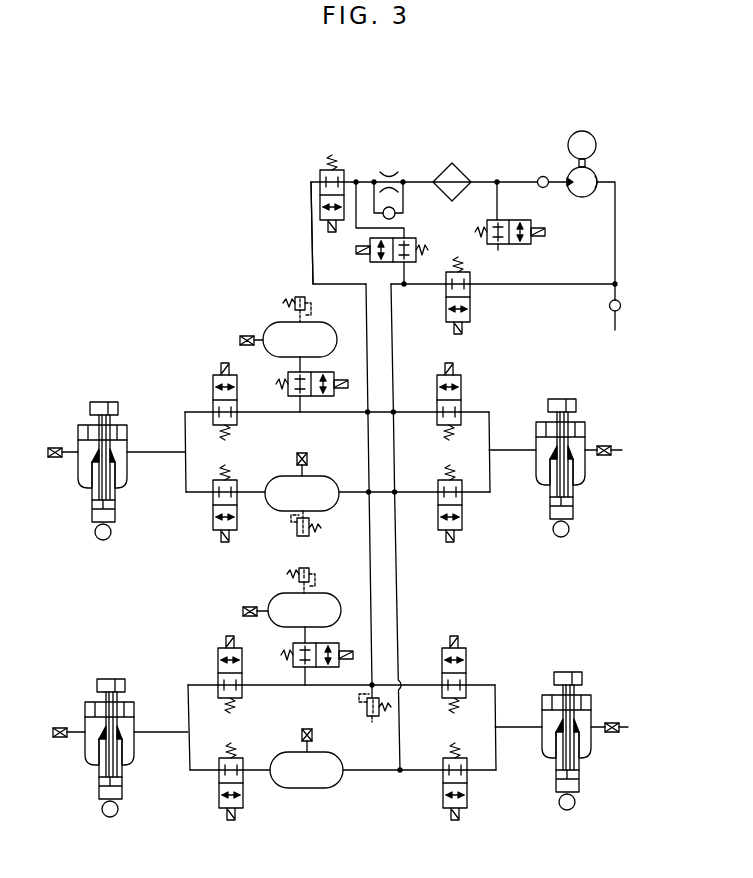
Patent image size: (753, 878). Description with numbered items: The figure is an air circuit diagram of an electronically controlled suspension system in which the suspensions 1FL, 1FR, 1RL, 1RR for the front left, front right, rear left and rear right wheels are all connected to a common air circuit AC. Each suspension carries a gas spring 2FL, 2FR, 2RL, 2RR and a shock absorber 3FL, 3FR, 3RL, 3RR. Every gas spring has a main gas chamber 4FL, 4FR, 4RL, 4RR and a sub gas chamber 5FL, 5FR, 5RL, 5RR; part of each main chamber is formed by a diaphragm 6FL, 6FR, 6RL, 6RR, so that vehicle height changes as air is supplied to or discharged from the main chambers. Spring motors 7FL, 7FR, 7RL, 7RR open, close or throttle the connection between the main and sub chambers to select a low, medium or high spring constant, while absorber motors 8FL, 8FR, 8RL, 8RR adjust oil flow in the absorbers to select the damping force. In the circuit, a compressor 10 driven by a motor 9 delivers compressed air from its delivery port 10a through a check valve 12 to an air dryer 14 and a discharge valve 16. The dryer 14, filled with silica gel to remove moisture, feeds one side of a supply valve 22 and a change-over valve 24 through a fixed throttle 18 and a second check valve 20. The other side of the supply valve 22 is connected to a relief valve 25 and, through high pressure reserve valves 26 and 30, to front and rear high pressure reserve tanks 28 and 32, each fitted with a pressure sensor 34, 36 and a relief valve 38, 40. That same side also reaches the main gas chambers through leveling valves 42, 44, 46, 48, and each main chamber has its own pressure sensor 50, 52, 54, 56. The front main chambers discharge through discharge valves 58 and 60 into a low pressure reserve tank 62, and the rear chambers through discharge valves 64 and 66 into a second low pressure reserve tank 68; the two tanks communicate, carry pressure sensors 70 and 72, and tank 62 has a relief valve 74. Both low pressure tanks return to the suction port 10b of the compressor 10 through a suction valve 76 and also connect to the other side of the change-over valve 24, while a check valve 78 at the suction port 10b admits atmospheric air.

The air circuit AC is at (234, 247).
The motor 9 is at (596, 144).
The compressor 10 is at (598, 170).
The delivery port 10a is at (571, 176).
The suction port 10b is at (598, 183).
The check valve 12 is at (543, 176).
The air dryer 14 is at (461, 172).
The discharge valve 16 is at (512, 246).
The fixed throttle 18 is at (390, 177).
The check valve 20 is at (396, 216).
The supply valve 22 is at (339, 172).
The change-over valve 24 is at (372, 240).
The relief valve 25 is at (374, 718).
The high pressure reserve valve 26 is at (288, 378).
The high pressure reserve tank 28 is at (287, 320).
The high pressure reserve valve 30 is at (293, 648).
The high pressure reserve tank 32 is at (320, 593).
The pressure sensor 34 is at (245, 336).
The pressure sensor 36 is at (250, 607).
The relief valve 38 is at (296, 299).
The relief valve 40 is at (297, 572).
The leveling valve 42 is at (213, 381).
The leveling valve 44 is at (461, 382).
The leveling valve 46 is at (218, 657).
The leveling valve 48 is at (466, 662).
The pressure sensor 50 is at (55, 448).
The pressure sensor 52 is at (622, 452).
The pressure sensor 54 is at (53, 730).
The pressure sensor 56 is at (620, 727).
The discharge valve 58 is at (213, 517).
The discharge valve 60 is at (462, 522).
The low pressure reserve tank 62 is at (322, 477).
The discharge valve 64 is at (219, 806).
The discharge valve 66 is at (468, 797).
The low pressure reserve tank 68 is at (306, 789).
The pressure sensor 70 is at (296, 458).
The pressure sensor 72 is at (313, 734).
The relief valve 74 is at (297, 530).
The suction valve 76 is at (473, 312).
The check valve 78 is at (621, 306).
The suspension 1FL is at (77, 444).
The gas spring 2FL is at (131, 423).
The shock absorber 3FL is at (131, 520).
The main gas chamber 4FL is at (60, 481).
The sub gas chamber 5FL is at (88, 410).
The diaphragm 6FL is at (71, 487).
The spring motor 7FL is at (121, 431).
The absorber motor 8FL is at (91, 389).
The suspension 1FR is at (585, 439).
The gas spring 2FR is at (535, 426).
The shock absorber 3FR is at (594, 517).
The main gas chamber 4FR is at (595, 481).
The sub gas chamber 5FR is at (583, 406).
The diaphragm 6FR is at (605, 490).
The spring motor 7FR is at (576, 427).
The absorber motor 8FR is at (548, 393).
The suspension 1RL is at (93, 714).
The gas spring 2RL is at (138, 711).
The shock absorber 3RL is at (140, 797).
The main gas chamber 4RL is at (67, 758).
The sub gas chamber 5RL is at (88, 699).
The diaphragm 6RL is at (78, 761).
The spring motor 7RL is at (131, 711).
The absorber motor 8RL is at (99, 668).
The suspension 1RR is at (596, 709).
The gas spring 2RR is at (542, 701).
The shock absorber 3RR is at (601, 790).
The main gas chamber 4RR is at (601, 751).
The sub gas chamber 5RR is at (591, 675).
The diaphragm 6RR is at (612, 758).
The spring motor 7RR is at (587, 694).
The absorber motor 8RR is at (557, 662).